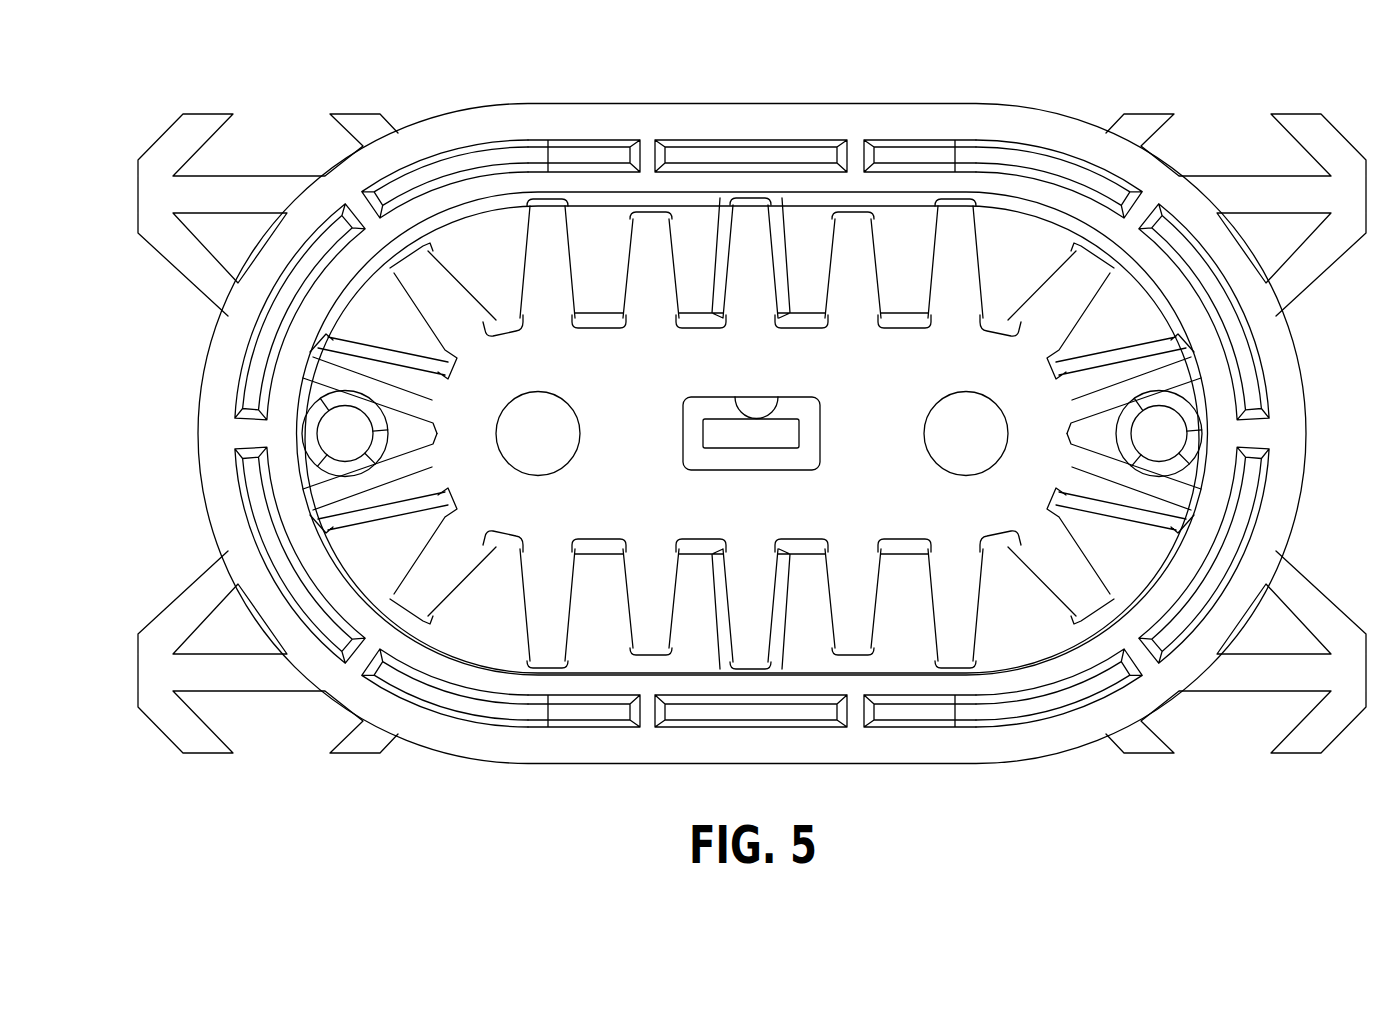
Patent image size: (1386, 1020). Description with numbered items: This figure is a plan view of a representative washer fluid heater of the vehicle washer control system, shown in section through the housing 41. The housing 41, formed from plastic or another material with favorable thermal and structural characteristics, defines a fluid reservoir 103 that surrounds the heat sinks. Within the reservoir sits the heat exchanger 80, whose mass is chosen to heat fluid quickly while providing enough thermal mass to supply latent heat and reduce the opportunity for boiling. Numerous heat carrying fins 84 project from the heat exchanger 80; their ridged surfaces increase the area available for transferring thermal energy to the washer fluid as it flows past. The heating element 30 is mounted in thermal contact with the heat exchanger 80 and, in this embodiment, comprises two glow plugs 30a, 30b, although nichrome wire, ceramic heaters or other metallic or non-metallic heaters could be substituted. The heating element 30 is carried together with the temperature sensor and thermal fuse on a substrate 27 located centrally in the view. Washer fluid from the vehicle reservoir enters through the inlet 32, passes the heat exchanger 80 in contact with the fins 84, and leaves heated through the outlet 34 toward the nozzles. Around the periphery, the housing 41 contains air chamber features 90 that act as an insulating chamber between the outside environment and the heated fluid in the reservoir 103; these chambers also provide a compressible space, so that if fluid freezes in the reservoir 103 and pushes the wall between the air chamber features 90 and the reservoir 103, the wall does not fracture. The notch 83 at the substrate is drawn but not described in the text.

The substrate 27 is at (750, 437).
The heating element 30 is at (958, 228).
The glow plug 30a is at (966, 434).
The glow plug 30b is at (538, 434).
The inlet 32 is at (345, 434).
The outlet 34 is at (1159, 434).
The housing 41 is at (227, 498).
The heat exchanger 80 is at (962, 508).
The notch 83 is at (790, 390).
The heat carrying fins 84 is at (1080, 596).
The air chamber features 90 is at (464, 162).
The fluid reservoir 103 is at (488, 615).